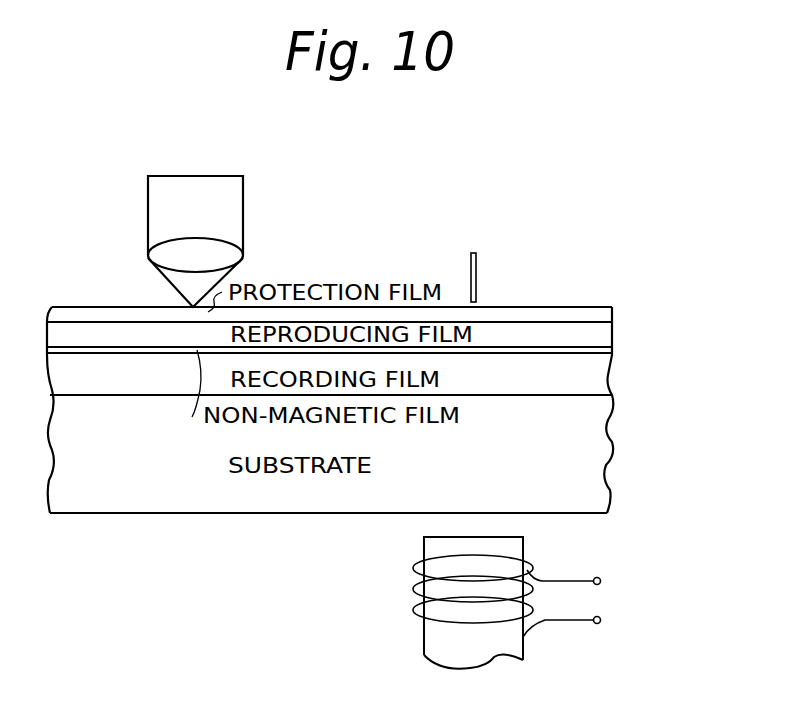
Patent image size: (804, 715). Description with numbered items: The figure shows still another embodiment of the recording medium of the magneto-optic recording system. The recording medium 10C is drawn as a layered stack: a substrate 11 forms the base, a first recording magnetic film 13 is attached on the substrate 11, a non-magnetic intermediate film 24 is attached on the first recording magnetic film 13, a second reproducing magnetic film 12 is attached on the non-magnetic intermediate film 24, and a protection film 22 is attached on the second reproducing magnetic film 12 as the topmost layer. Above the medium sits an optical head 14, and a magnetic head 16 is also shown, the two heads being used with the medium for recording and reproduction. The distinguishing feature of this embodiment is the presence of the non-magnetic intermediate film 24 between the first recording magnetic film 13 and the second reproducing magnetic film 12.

The recording medium 10C is at (215, 513).
The substrate 11 is at (600, 450).
The second reproducing magnetic film 12 is at (610, 332).
The first recording magnetic film 13 is at (598, 373).
The optical head 14 is at (243, 206).
The magnetic head 16 is at (477, 258).
The protection film 22 is at (610, 313).
The non-magnetic intermediate film 24 is at (613, 353).